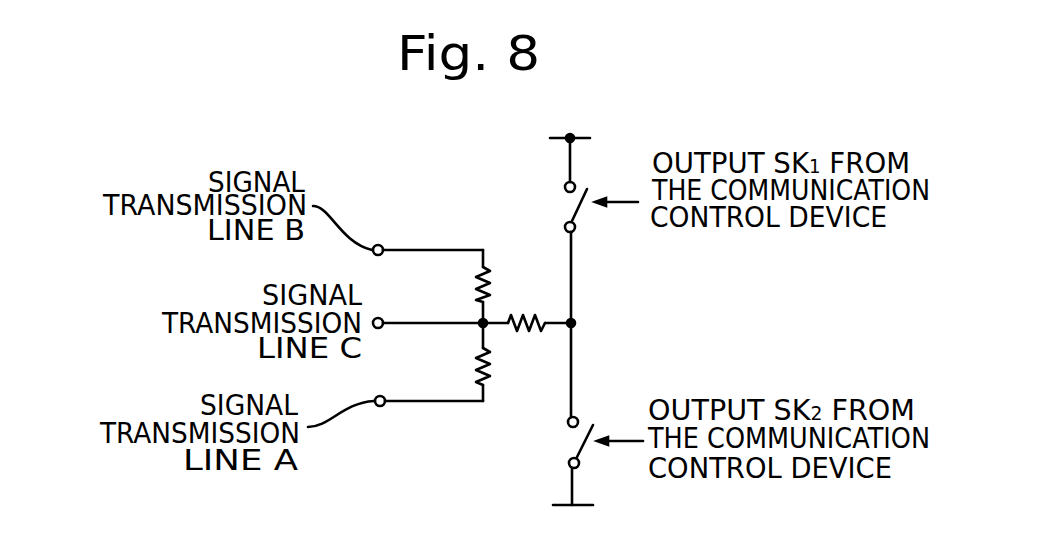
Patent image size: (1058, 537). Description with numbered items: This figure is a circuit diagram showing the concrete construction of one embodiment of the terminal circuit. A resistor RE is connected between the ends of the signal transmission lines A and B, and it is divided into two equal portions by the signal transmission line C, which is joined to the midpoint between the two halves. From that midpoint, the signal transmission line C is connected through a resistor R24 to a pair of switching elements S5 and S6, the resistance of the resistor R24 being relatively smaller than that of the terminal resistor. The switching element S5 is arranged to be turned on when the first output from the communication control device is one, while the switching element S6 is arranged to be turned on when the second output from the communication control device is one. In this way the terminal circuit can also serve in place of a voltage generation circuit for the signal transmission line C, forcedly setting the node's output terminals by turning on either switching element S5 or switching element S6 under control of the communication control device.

The switching element S5 is at (561, 207).
The switching element S6 is at (560, 442).
The resistor R24 is at (527, 305).
The resistor RE is at (461, 290).